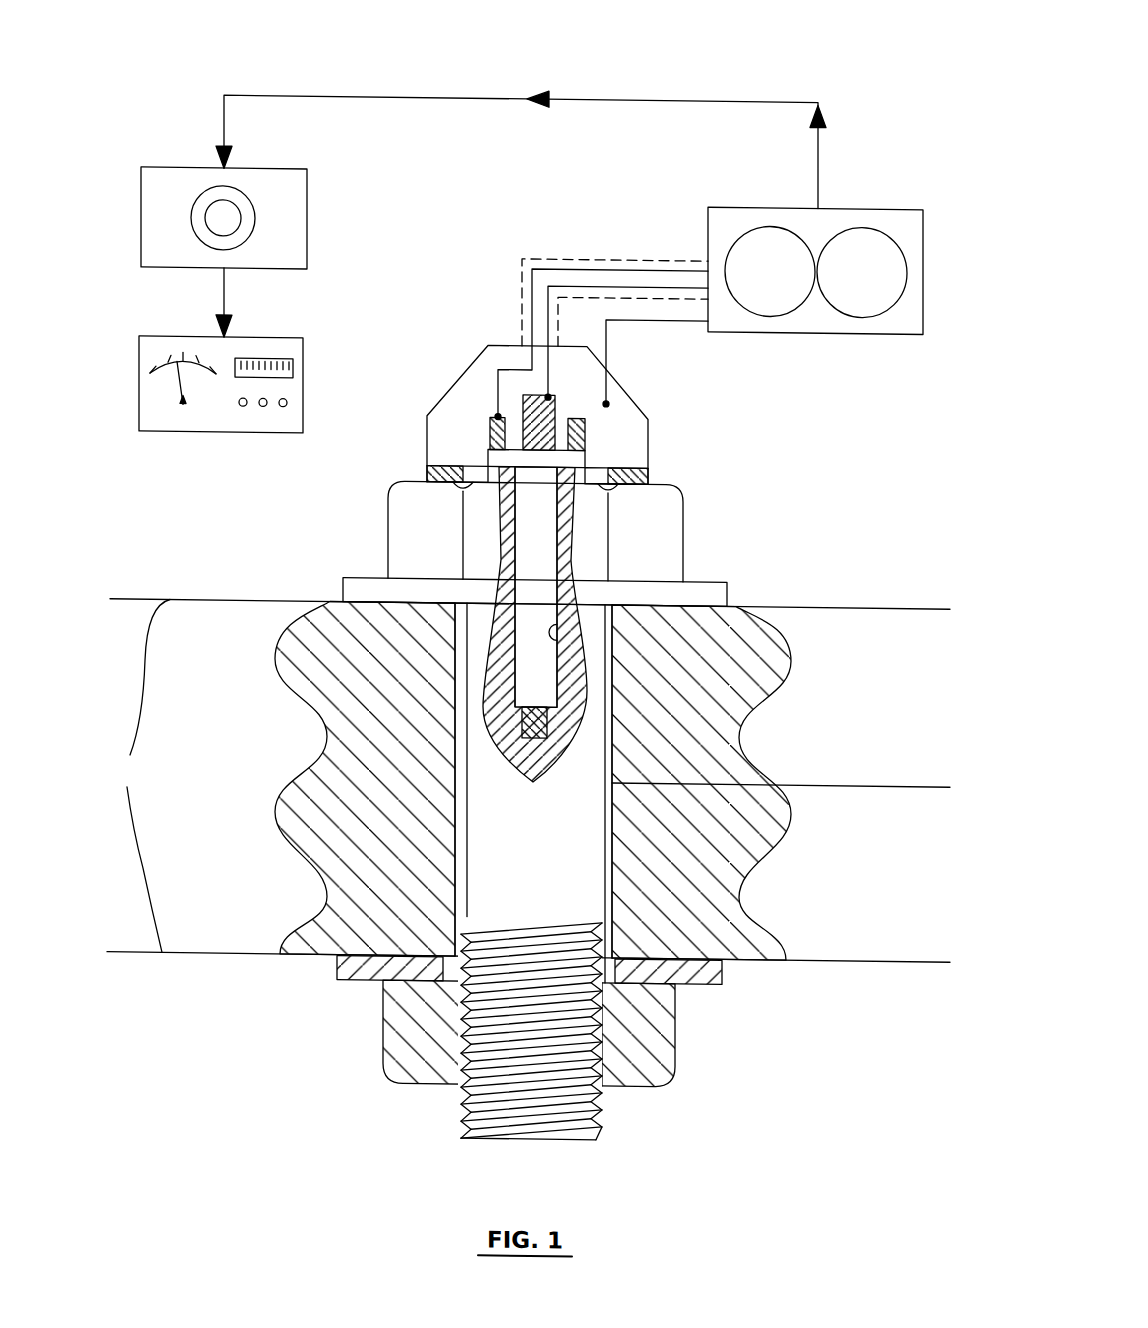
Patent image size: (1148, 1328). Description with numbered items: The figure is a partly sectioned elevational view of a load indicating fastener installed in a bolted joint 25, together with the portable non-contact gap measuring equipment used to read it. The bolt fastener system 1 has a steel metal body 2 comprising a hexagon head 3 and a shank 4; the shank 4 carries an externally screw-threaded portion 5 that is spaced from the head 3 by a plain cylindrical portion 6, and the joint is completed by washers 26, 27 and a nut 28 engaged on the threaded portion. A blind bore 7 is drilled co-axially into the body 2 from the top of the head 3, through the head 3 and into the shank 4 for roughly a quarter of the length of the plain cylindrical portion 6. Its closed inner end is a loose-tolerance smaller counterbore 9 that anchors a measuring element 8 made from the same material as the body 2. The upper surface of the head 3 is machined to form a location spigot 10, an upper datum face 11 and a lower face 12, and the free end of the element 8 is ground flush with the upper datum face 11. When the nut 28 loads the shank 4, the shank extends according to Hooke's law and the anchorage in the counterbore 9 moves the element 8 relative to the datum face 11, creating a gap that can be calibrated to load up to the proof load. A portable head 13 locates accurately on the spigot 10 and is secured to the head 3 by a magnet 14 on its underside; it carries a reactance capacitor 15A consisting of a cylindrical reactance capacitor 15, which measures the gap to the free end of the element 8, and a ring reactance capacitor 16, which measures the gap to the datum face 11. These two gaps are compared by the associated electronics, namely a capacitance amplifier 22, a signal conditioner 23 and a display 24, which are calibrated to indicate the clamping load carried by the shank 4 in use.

The bolt fastener system 1 is at (554, 105).
The metal body 2 is at (544, 614).
The hexagon head 3 is at (400, 552).
The shank 4 is at (587, 850).
The externally screw-threaded portion 5 is at (597, 1127).
The plain cylindrical portion 6 is at (588, 746).
The blind bore 7 is at (558, 650).
The measuring element 8 is at (527, 650).
The counterbore 9 is at (520, 718).
The location spigot 10 is at (610, 470).
The upper datum face 11 is at (587, 457).
The lower face 12 is at (653, 482).
The portable head 13 is at (428, 413).
The magnet 14 is at (650, 480).
The cylindrical reactance capacitor 15 is at (543, 408).
The reactance capacitor 15A is at (541, 319).
The ring reactance capacitor 16 is at (585, 438).
The capacitance amplifier 22 is at (708, 216).
The signal conditioner 23 is at (307, 188).
The display 24 is at (303, 352).
The bolted joint 25 is at (455, 777).
The washer 26 is at (730, 586).
The washer 27 is at (722, 975).
The nut 28 is at (675, 1030).